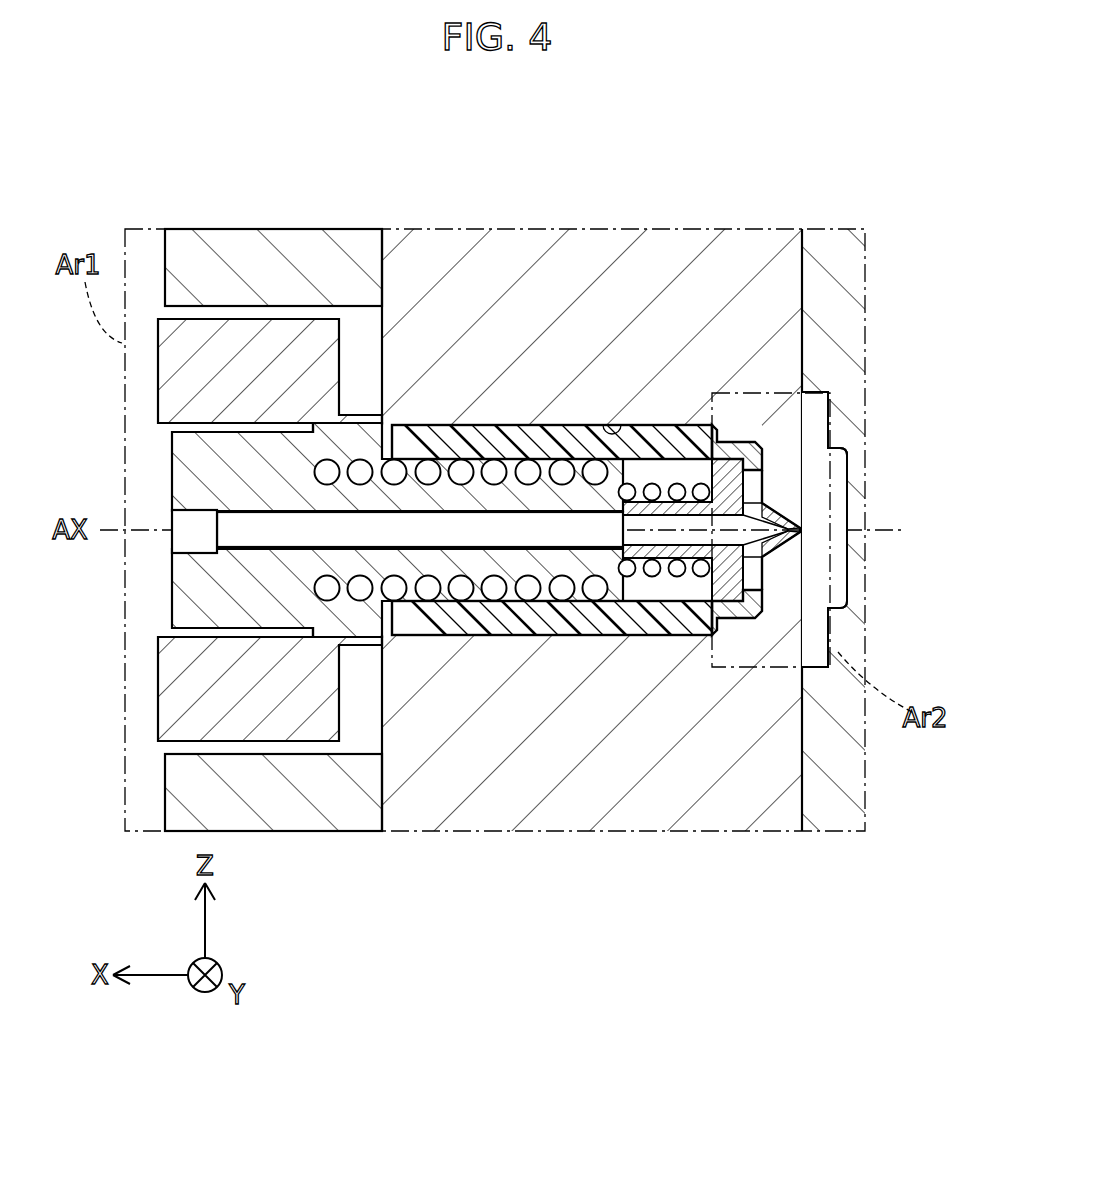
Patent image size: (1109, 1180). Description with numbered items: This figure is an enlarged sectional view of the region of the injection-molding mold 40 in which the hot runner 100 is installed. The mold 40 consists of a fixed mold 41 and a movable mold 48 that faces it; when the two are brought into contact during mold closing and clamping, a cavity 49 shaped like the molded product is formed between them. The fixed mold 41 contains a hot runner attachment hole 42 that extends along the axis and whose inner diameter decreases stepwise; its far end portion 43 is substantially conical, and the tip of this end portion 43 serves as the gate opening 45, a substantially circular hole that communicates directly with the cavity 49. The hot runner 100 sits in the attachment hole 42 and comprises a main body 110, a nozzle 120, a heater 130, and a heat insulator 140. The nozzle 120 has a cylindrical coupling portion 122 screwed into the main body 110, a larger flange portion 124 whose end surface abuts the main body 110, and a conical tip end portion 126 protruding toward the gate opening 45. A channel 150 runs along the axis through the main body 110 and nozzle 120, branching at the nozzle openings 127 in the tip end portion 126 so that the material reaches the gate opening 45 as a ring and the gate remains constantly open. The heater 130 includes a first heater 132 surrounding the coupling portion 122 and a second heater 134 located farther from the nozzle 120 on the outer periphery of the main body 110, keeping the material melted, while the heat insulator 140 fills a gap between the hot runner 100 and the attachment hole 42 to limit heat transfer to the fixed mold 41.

The hot runner 100 is at (459, 373).
The main body 110 is at (505, 497).
The hot runner attachment hole 42 is at (612, 425).
The injection-molding mold 40 is at (663, 481).
The fixed mold 41 is at (747, 310).
The movable mold 48 is at (873, 503).
The nozzle 120 is at (779, 606).
The nozzle opening 127 is at (828, 448).
The end portion 43 is at (786, 522).
The gate opening 45 is at (803, 527).
The cavity 49 is at (848, 547).
The tip end portion 126 is at (777, 553).
The heat insulator 140 is at (399, 620).
The channel 150 is at (456, 537).
The heater 130 is at (514, 686).
The first heater 132 is at (628, 612).
The second heater 134 is at (546, 592).
The coupling portion 122 is at (670, 568).
The flange portion 124 is at (740, 572).